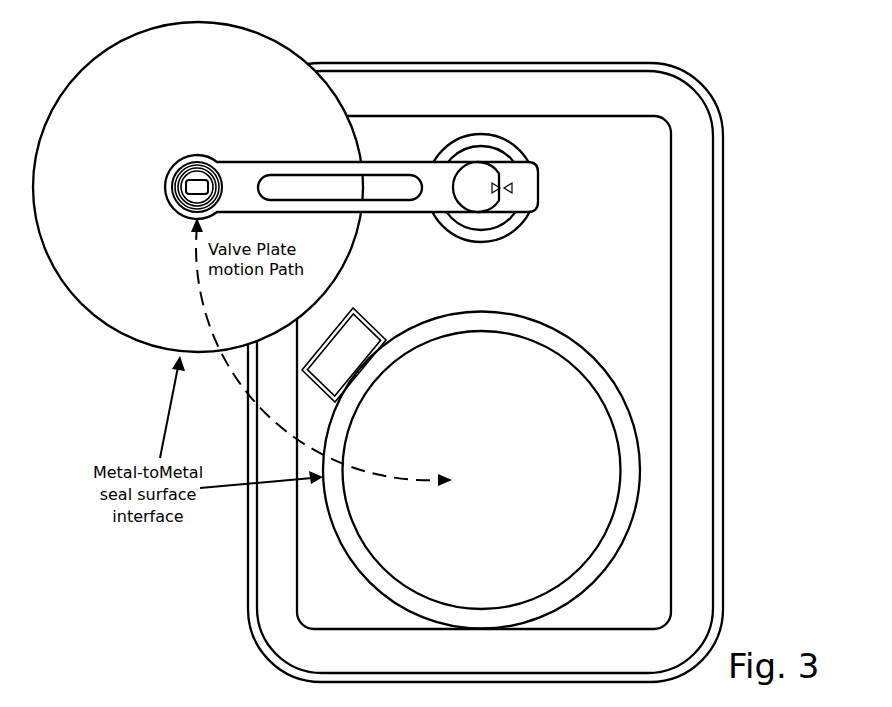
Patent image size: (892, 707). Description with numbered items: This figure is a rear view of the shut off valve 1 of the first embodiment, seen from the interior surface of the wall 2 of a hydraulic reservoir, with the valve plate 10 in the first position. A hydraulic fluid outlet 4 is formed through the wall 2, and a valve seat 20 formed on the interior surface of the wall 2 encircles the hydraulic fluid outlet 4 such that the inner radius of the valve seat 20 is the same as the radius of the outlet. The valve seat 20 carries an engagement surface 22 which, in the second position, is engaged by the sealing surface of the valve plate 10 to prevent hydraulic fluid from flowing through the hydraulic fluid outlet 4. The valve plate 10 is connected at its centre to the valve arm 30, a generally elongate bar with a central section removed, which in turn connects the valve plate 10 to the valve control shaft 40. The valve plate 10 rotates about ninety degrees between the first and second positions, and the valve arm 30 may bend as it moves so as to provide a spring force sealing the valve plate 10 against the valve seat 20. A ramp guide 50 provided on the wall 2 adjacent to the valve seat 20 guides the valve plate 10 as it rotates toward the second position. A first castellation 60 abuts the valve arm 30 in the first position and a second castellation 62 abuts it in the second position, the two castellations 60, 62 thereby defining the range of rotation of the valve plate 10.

The shut off valve 1 is at (748, 79).
The wall 2 is at (720, 374).
The hydraulic fluid outlet 4 is at (590, 489).
The valve plate 10 is at (66, 288).
The valve seat 20 is at (343, 553).
The engagement surface 22 is at (377, 575).
The valve arm 30 is at (373, 162).
The valve control shaft 40 is at (490, 178).
The ramp guide 50 is at (318, 384).
The first castellation 60 is at (512, 222).
The second castellation 62 is at (452, 153).